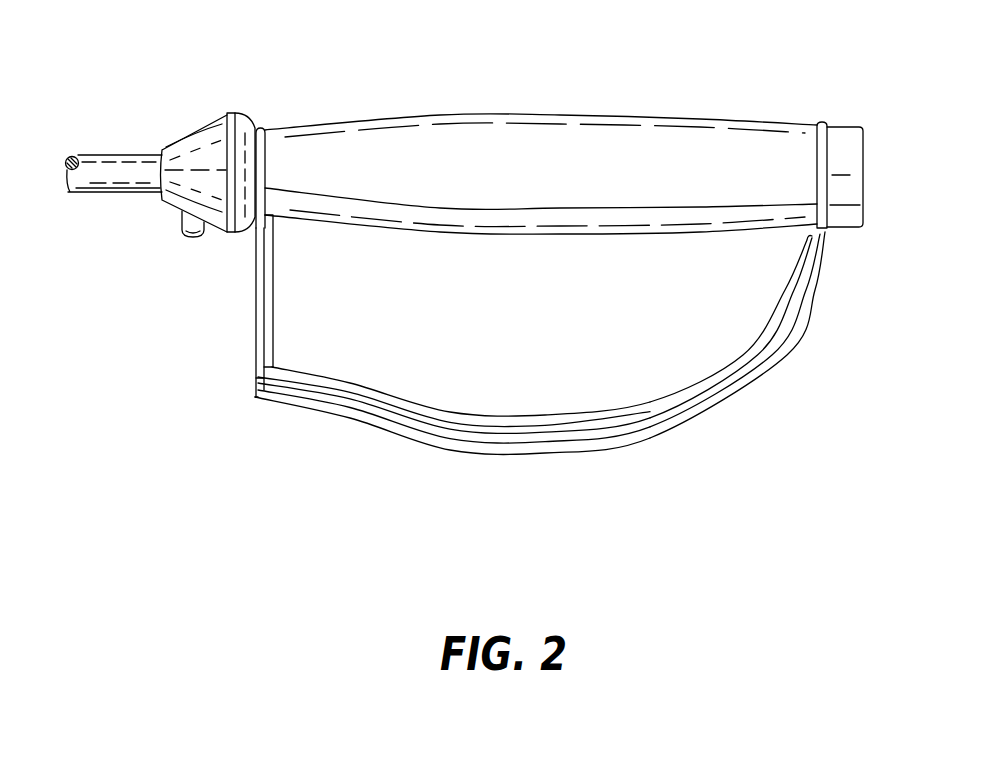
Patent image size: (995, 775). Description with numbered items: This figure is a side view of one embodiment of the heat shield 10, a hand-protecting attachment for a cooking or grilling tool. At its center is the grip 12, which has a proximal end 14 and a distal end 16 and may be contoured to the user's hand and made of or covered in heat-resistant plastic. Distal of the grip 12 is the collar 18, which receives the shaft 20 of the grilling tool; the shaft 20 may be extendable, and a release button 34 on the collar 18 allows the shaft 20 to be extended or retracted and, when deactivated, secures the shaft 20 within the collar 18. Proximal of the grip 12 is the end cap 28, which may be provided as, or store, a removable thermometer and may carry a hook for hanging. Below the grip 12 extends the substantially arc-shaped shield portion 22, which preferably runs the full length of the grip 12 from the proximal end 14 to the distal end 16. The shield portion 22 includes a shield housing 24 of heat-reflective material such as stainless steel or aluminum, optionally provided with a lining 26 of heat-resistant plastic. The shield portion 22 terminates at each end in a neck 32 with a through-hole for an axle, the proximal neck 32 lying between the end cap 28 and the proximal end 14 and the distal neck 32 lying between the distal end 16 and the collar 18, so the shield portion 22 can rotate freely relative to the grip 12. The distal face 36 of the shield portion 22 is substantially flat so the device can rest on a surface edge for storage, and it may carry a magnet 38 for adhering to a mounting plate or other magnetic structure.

The heat shield 10 is at (208, 468).
The grip 12 is at (565, 116).
The proximal end 14 is at (800, 100).
The distal end 16 is at (296, 99).
The collar 18 is at (195, 140).
The shaft 20 is at (118, 165).
The shield portion 22 is at (544, 487).
The shield housing 24 is at (313, 414).
The lining 26 is at (695, 387).
The end cap 28 is at (855, 130).
The neck 32 is at (261, 126).
The release button 34 is at (190, 238).
The distal face 36 is at (228, 292).
The magnet 38 is at (253, 368).